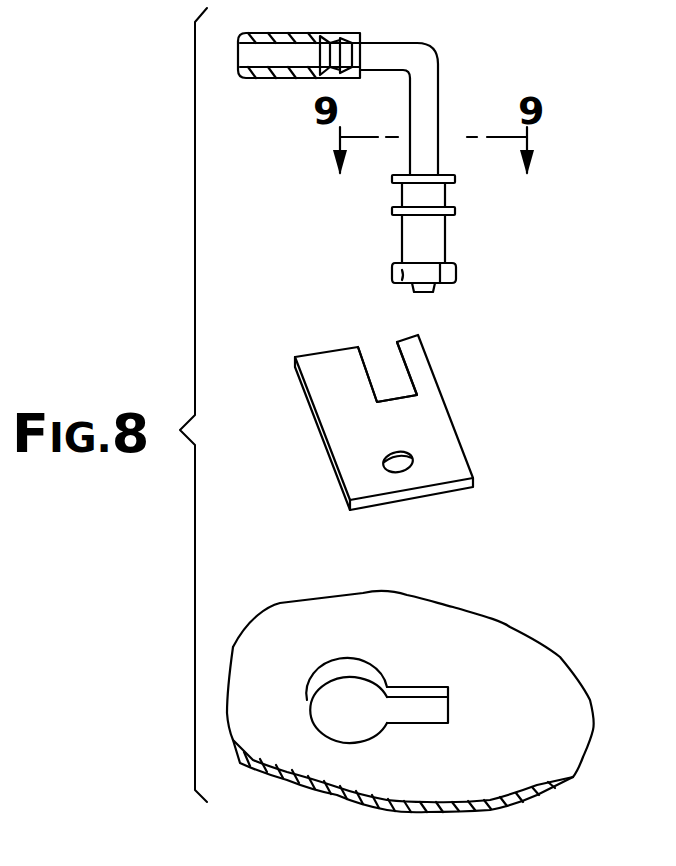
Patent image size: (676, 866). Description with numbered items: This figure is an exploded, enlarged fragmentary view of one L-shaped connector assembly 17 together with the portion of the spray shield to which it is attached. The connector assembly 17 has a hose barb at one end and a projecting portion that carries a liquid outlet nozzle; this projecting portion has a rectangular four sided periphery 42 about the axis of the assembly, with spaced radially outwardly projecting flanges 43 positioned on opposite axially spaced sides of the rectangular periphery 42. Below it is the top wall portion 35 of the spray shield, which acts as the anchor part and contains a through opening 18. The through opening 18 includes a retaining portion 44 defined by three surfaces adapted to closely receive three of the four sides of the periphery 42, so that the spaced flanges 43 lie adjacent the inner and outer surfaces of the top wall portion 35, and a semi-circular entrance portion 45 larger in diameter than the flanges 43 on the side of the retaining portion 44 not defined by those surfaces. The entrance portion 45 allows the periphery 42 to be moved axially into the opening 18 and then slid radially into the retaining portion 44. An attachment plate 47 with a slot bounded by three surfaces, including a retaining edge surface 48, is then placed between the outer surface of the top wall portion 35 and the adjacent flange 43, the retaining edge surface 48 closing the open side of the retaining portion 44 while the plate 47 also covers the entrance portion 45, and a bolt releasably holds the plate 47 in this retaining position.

The L-shaped connector assembly 17 is at (437, 41).
The rectangular four sided periphery 42 is at (442, 193).
The flanges 43 is at (392, 179).
The attachment plate 47 is at (445, 428).
The retaining edge surface 48 is at (368, 360).
The top wall portion 35 is at (550, 660).
The semi-circular entrance portion 45 is at (355, 668).
The retaining portion 44 is at (447, 717).
The through opening 18 is at (365, 738).